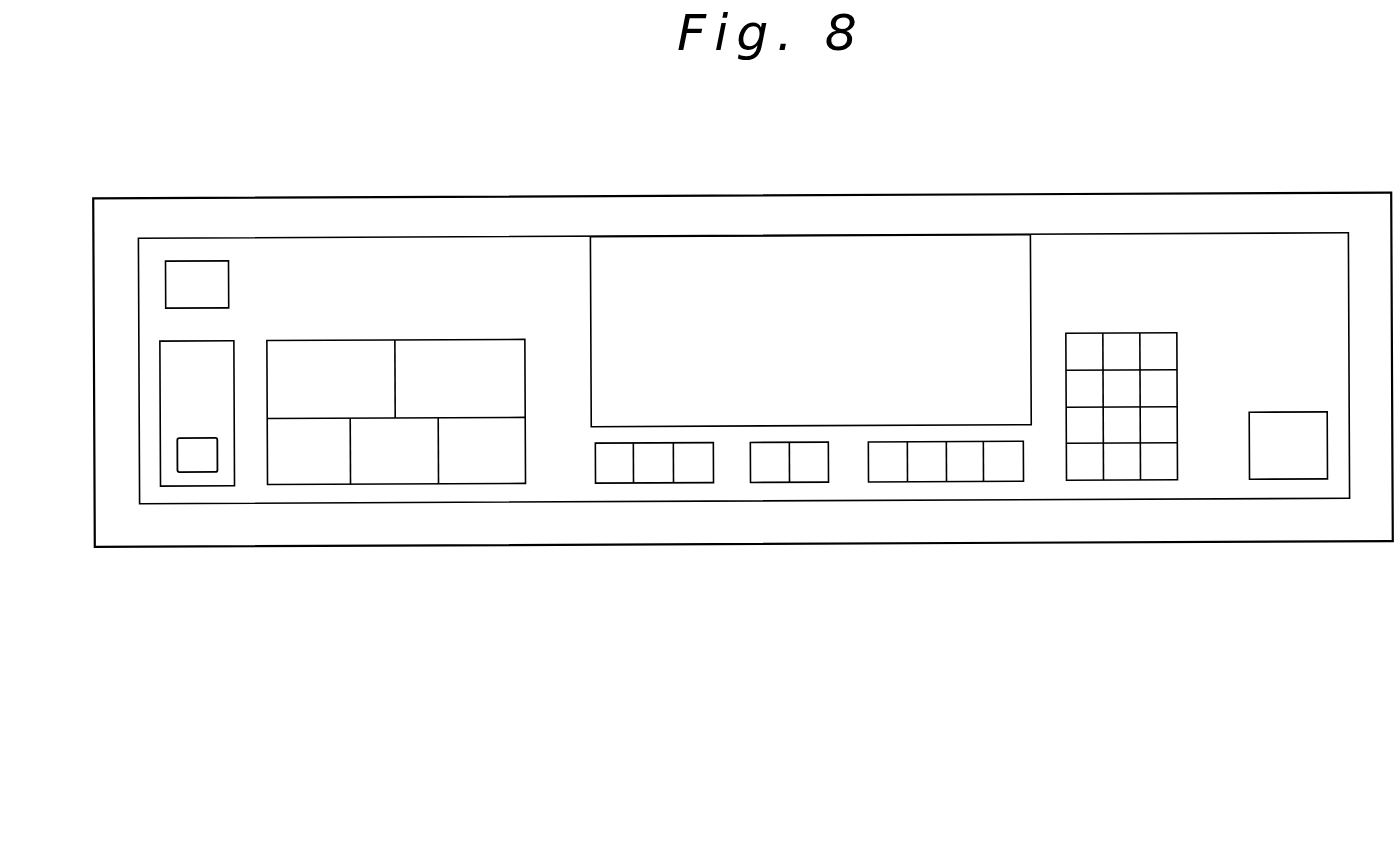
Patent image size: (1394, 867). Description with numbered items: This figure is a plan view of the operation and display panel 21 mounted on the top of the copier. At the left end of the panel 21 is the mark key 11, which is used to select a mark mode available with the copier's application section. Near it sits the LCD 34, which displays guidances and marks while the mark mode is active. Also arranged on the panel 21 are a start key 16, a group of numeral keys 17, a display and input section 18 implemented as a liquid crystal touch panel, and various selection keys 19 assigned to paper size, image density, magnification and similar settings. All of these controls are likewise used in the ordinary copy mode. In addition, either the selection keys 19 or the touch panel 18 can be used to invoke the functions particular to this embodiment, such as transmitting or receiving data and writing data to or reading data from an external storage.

The operation and display panel 21 is at (372, 186).
The LCD 34 is at (206, 274).
The mark key 11 is at (197, 464).
The display and input section 18 is at (828, 253).
The selection keys 19 is at (858, 508).
The numeral keys 17 is at (1066, 335).
The start key 16 is at (1294, 468).